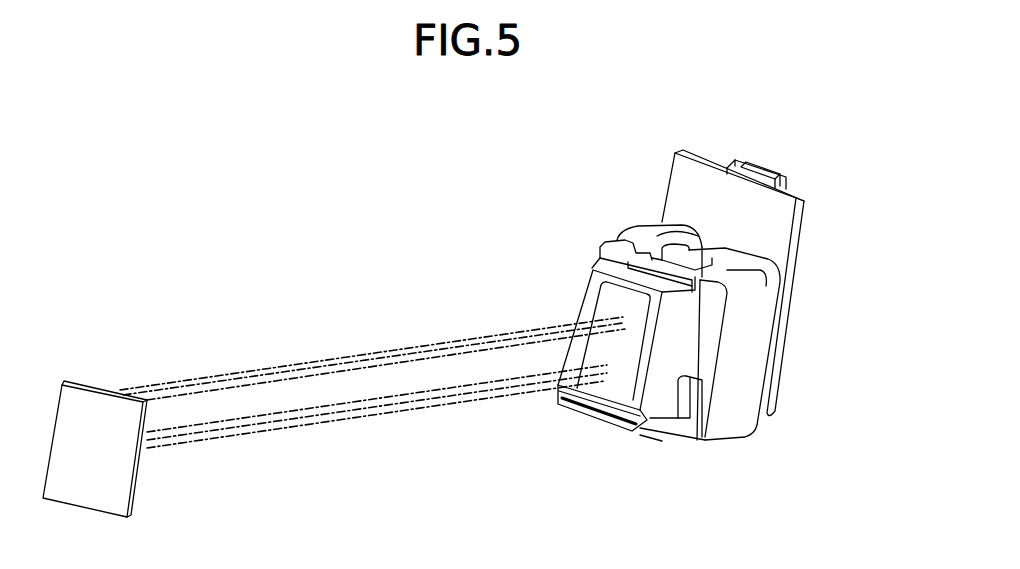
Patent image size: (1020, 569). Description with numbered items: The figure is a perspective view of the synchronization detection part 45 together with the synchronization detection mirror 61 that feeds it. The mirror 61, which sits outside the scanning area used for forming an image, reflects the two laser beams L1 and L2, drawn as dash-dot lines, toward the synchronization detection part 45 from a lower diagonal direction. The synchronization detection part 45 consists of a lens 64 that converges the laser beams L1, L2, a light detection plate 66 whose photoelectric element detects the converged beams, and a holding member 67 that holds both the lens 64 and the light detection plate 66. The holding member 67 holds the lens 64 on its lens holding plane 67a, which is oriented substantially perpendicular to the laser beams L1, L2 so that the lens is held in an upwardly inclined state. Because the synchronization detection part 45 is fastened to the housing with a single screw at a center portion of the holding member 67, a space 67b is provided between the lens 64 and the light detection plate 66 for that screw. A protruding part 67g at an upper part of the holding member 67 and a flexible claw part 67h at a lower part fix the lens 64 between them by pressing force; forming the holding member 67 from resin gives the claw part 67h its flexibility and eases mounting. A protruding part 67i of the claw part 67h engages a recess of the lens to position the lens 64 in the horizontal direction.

The synchronization detection part 45 is at (596, 180).
The synchronization detection mirror 61 is at (77, 405).
The laser beam L1 is at (270, 377).
The laser beam L2 is at (278, 417).
The lens 64 is at (602, 300).
The light detection plate 66 is at (773, 250).
The holding member 67 is at (738, 418).
The lens holding plane 67a is at (708, 337).
The space 67b is at (716, 262).
The protruding part 67g is at (612, 247).
The claw part 67h is at (640, 427).
The protruding part 67i is at (590, 378).